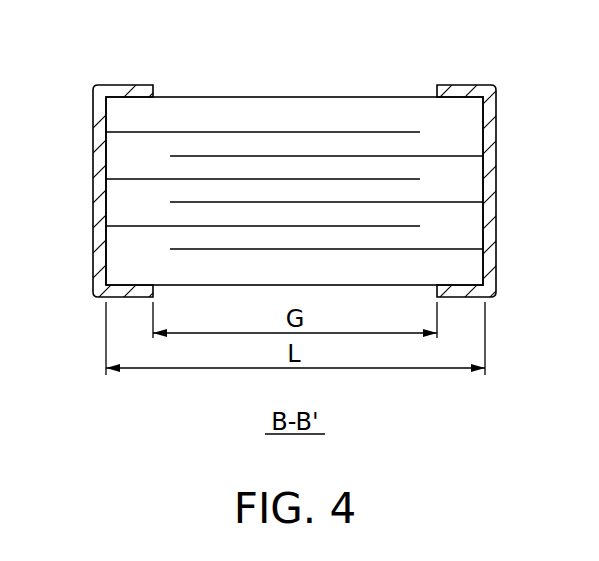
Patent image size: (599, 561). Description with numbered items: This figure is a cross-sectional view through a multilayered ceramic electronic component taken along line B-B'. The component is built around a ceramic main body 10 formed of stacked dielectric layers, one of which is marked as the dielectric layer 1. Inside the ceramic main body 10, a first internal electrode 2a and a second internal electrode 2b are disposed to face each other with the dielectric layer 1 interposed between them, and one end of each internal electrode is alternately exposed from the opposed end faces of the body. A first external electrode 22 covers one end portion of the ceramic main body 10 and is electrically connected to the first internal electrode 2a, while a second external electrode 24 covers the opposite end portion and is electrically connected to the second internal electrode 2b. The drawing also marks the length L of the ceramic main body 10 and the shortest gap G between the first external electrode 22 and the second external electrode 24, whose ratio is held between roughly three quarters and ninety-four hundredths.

The dielectric layer 1 is at (296, 229).
The ceramic main body 10 is at (341, 97).
The first external electrode 22 is at (122, 91).
The second external electrode 24 is at (461, 88).
The first internal electrode 2a is at (117, 178).
The second internal electrode 2b is at (468, 157).